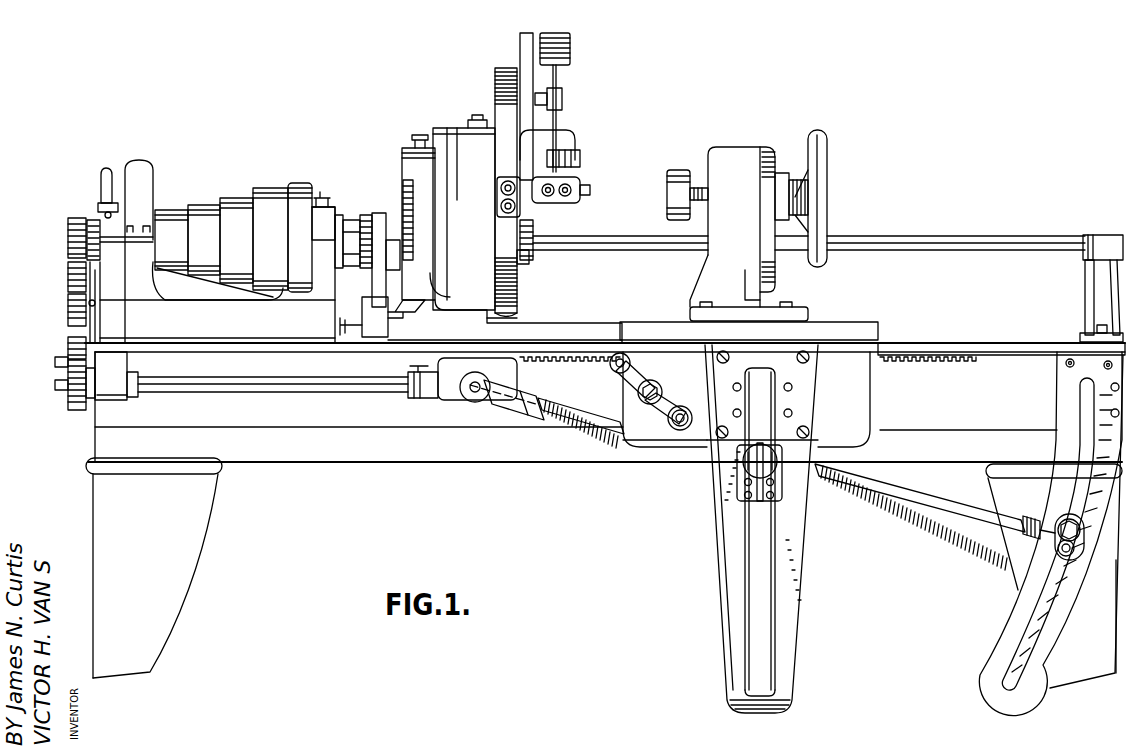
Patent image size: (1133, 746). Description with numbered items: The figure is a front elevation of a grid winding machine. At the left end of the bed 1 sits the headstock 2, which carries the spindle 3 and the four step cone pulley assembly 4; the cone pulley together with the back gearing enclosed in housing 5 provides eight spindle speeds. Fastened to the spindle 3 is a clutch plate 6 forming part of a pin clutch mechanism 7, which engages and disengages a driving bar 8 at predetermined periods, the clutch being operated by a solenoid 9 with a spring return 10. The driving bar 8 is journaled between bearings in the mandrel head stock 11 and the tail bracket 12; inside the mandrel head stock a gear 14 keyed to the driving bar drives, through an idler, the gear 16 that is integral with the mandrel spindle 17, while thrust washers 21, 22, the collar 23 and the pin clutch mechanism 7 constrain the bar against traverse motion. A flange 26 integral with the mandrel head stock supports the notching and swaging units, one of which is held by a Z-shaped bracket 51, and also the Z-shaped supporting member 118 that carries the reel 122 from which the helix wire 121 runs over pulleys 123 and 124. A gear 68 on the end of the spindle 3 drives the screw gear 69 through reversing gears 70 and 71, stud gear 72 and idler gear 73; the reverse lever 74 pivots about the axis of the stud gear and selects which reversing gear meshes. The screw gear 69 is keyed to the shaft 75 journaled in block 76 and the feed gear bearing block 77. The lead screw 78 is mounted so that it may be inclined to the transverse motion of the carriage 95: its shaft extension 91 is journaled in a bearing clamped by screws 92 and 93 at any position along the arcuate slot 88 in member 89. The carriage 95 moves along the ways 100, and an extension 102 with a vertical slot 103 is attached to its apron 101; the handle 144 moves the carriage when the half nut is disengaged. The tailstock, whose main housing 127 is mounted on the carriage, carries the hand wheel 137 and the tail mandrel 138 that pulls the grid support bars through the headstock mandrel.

The bed 1 is at (292, 450).
The headstock 2 is at (211, 251).
The spindle 3 is at (346, 228).
The four step cone pulley assembly 4 is at (211, 210).
The housing 5 is at (298, 183).
The clutch plate 6 is at (368, 225).
The pin clutch mechanism 7 is at (386, 260).
The driving bar 8 is at (923, 240).
The solenoid 9 is at (364, 317).
The spring return 10 is at (395, 312).
The mandrel head stock 11 is at (505, 205).
The tail bracket 12 is at (1097, 236).
The gear 14 is at (381, 378).
The gear 16 is at (723, 438).
The spindle 17 is at (758, 402).
The thrust washer 21 is at (414, 233).
The thrust washer 22 is at (522, 264).
The collar 23 is at (533, 244).
The flange 26 is at (517, 313).
The Z-shaped bracket 51 is at (582, 186).
The gear 68 is at (80, 220).
The screw gear 69 is at (66, 405).
The reversing gear 70 is at (68, 258).
The reversing gear 71 is at (68, 288).
The stud gear 72 is at (68, 322).
The idler gear 73 is at (66, 352).
The reverse lever 74 is at (96, 303).
The shaft 75 is at (265, 385).
The block 76 is at (110, 396).
The feed gear bearing block 77 is at (457, 399).
The lead screw 78 is at (905, 500).
The arcuate slot 88 is at (1025, 645).
The member 89 is at (1008, 612).
The shaft extension 91 is at (1027, 517).
The screw 92 is at (1063, 522).
The screw 93 is at (1057, 548).
The carriage 95 is at (855, 322).
The ways 100 is at (948, 343).
The apron 101 is at (857, 398).
The extension 102 is at (806, 592).
The vertical slot 103 is at (768, 562).
The supporting member 118 is at (575, 138).
The helix wire 121 is at (558, 125).
The reel 122 is at (570, 55).
The pulley 123 is at (562, 97).
The pulley 124 is at (578, 156).
The main housing 127 is at (749, 234).
The hand wheel 137 is at (822, 150).
The tail mandrel 138 is at (678, 168).
The handle 144 is at (632, 363).